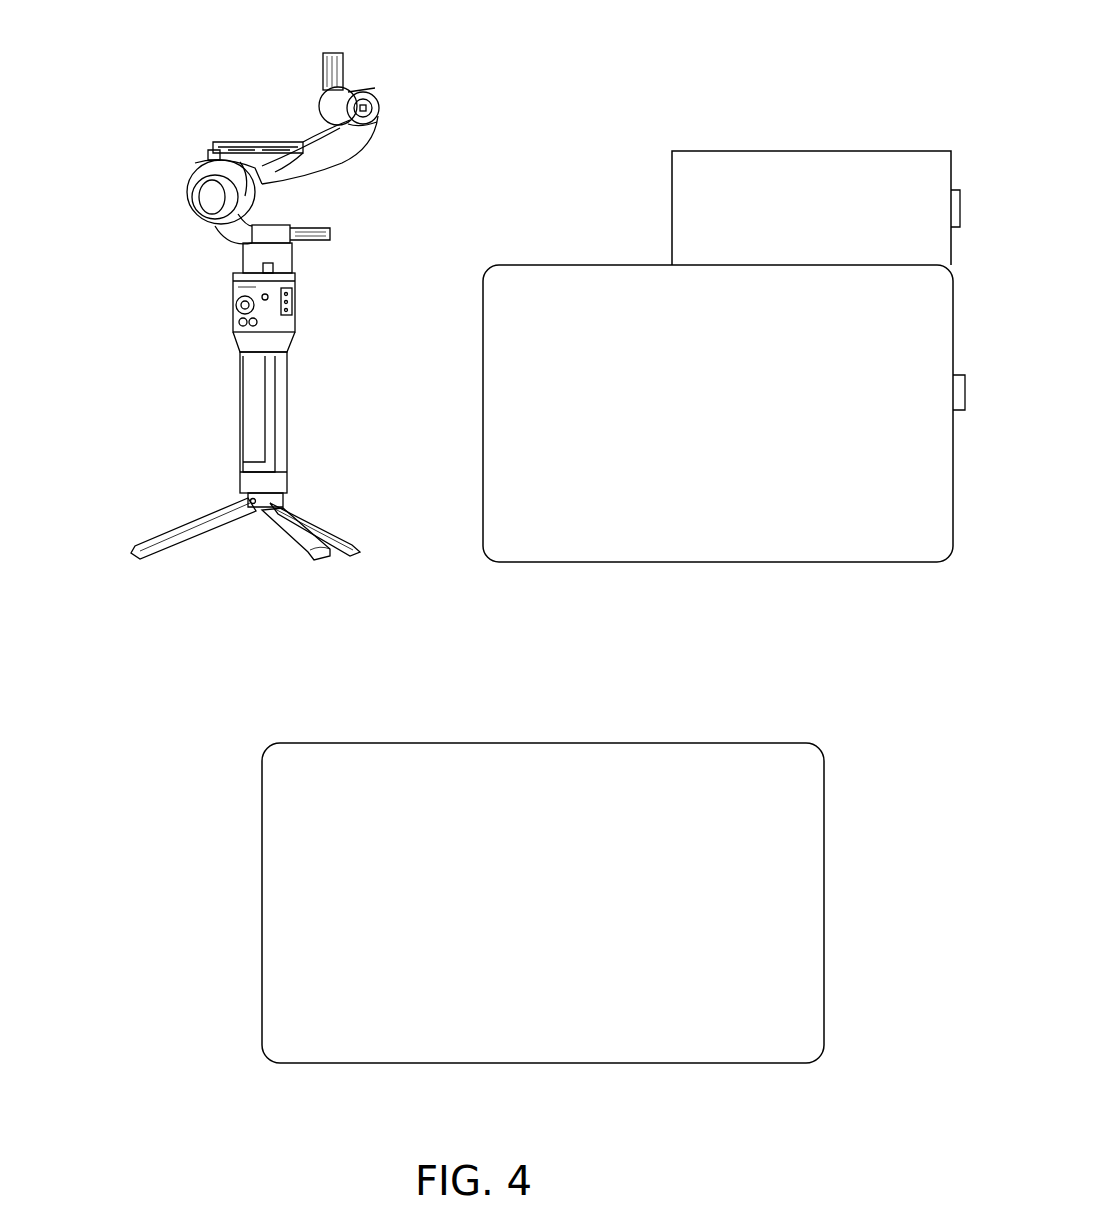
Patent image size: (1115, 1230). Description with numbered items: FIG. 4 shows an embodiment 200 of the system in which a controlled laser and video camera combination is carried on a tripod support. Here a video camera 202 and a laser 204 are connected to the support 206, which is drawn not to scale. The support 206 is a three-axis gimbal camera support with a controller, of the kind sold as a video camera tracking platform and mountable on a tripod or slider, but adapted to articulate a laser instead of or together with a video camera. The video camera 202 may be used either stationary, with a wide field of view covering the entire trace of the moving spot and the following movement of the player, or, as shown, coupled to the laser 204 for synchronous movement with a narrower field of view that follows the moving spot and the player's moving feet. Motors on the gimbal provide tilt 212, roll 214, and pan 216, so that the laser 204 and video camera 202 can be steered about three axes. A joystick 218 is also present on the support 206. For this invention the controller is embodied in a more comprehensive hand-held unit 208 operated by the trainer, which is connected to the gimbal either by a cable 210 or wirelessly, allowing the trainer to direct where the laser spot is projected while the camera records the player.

The embodiment 200 is at (483, 70).
The video camera 202 is at (497, 263).
The laser 204 is at (733, 150).
The support 206 is at (212, 140).
The hand-held unit 208 is at (570, 745).
The cable 210 is at (240, 329).
The tilt motor 212 is at (370, 93).
The roll motor 214 is at (200, 206).
The pan motor 216 is at (240, 262).
The joystick 218 is at (227, 303).